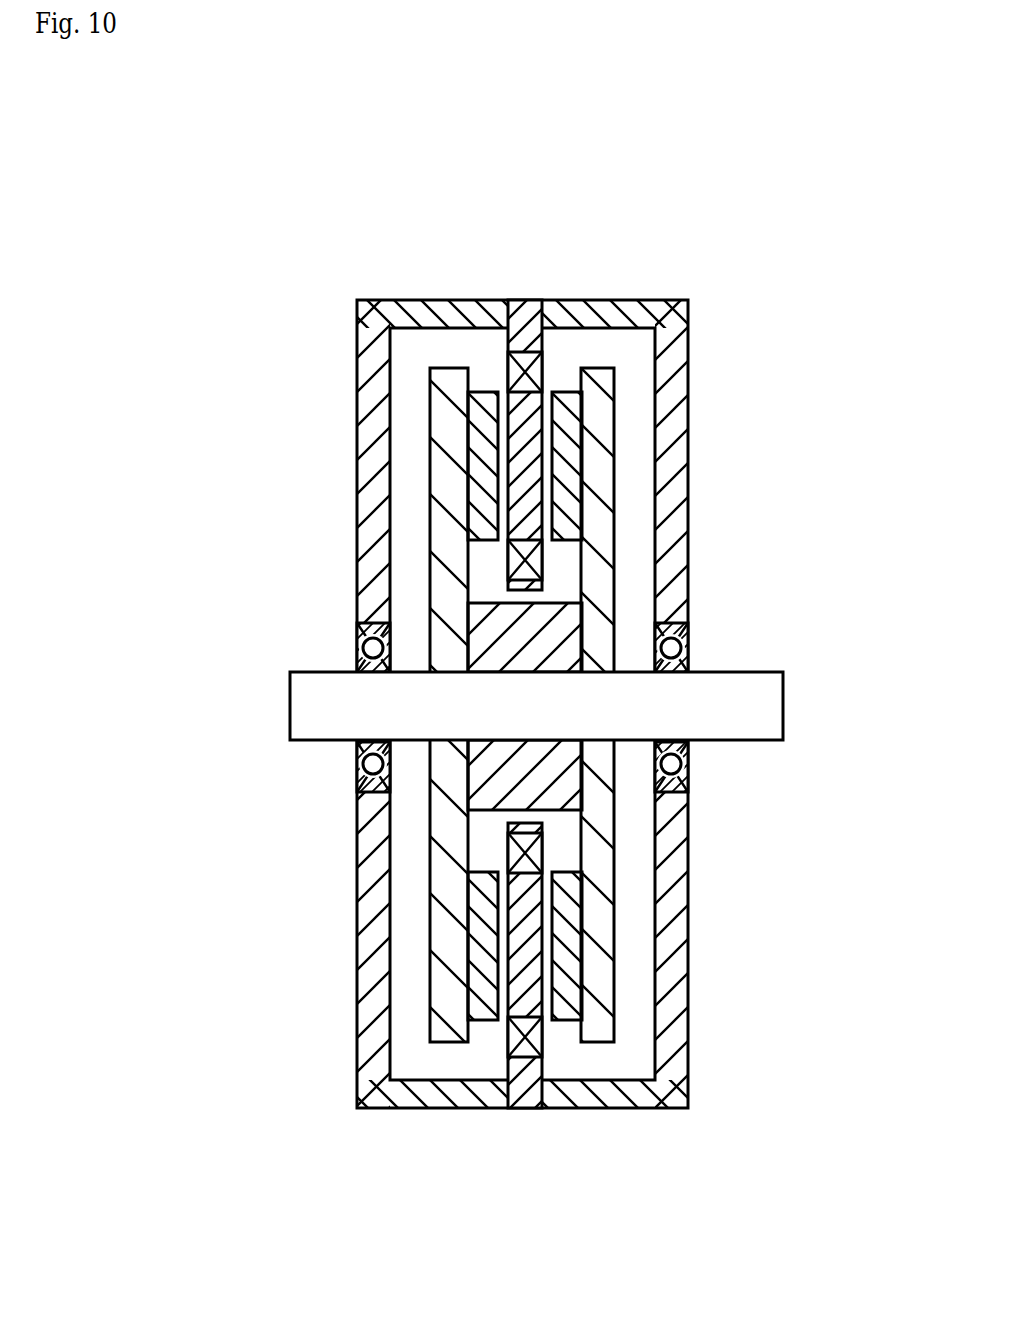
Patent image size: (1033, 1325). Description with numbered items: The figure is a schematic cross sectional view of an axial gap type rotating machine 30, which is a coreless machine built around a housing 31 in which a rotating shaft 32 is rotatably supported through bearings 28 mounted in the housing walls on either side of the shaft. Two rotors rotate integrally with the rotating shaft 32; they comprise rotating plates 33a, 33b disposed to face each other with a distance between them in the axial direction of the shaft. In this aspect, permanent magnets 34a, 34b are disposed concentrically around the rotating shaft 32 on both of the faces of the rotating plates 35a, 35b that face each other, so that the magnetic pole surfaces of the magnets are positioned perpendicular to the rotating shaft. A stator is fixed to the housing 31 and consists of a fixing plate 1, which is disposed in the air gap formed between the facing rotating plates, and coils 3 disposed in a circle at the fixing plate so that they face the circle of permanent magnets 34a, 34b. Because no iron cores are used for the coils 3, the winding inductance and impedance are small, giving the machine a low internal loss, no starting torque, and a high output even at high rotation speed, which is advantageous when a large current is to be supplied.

The fixing plate 1 is at (527, 1092).
The coils 3 is at (543, 557).
The bearings 28 is at (355, 635).
The axial gap type rotating machine 30 is at (746, 250).
The housing 31 is at (670, 473).
The rotating shaft 32 is at (777, 700).
The rotating plate 33a is at (603, 430).
The rotating plate 33b is at (443, 390).
The permanent magnets 34a is at (567, 407).
The permanent magnets 34b is at (477, 427).
The rotating plate 35a is at (570, 348).
The rotating plate 35b is at (495, 348).